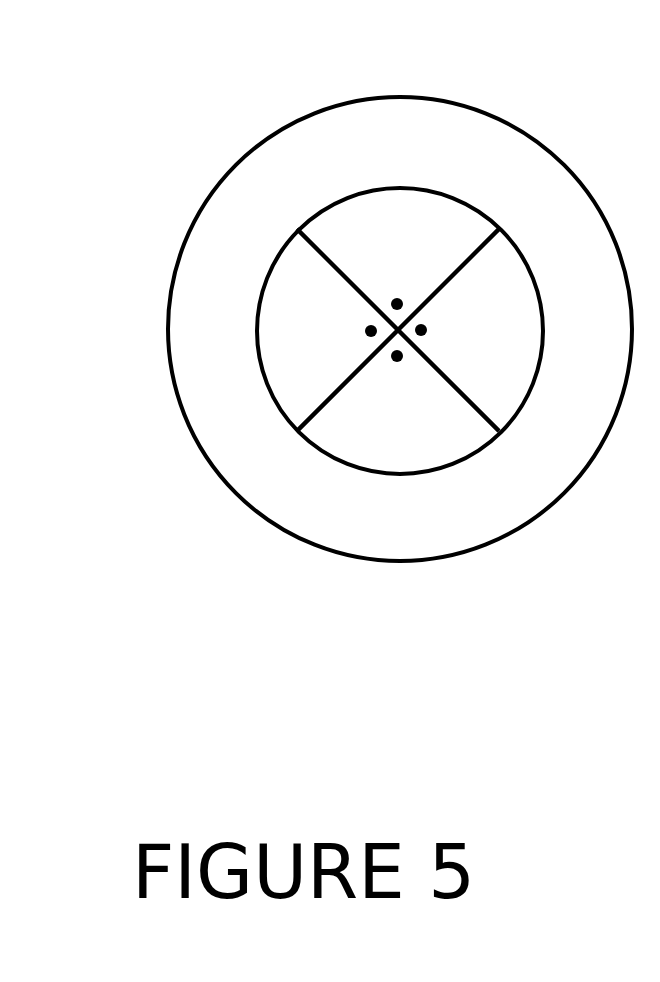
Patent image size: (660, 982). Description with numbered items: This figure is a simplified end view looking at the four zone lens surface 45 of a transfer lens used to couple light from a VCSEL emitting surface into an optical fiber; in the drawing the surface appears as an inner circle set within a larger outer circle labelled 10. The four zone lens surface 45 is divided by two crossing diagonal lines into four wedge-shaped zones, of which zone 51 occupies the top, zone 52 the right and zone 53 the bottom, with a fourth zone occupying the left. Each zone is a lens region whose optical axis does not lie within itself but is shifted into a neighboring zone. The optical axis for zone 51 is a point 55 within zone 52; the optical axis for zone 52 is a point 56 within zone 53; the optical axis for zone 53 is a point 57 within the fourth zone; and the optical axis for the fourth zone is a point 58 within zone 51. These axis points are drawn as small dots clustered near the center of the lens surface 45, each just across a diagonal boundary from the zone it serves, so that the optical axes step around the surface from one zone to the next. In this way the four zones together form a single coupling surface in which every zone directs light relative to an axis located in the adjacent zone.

The optical element 10 is at (435, 561).
The four zone lens surface 45 is at (438, 185).
The zone 51 is at (458, 254).
The zone 52 is at (513, 386).
The zone 53 is at (389, 448).
The point 57 is at (331, 306).
The point 55 is at (365, 334).
The point 56 is at (400, 363).
The point 58 is at (388, 296).